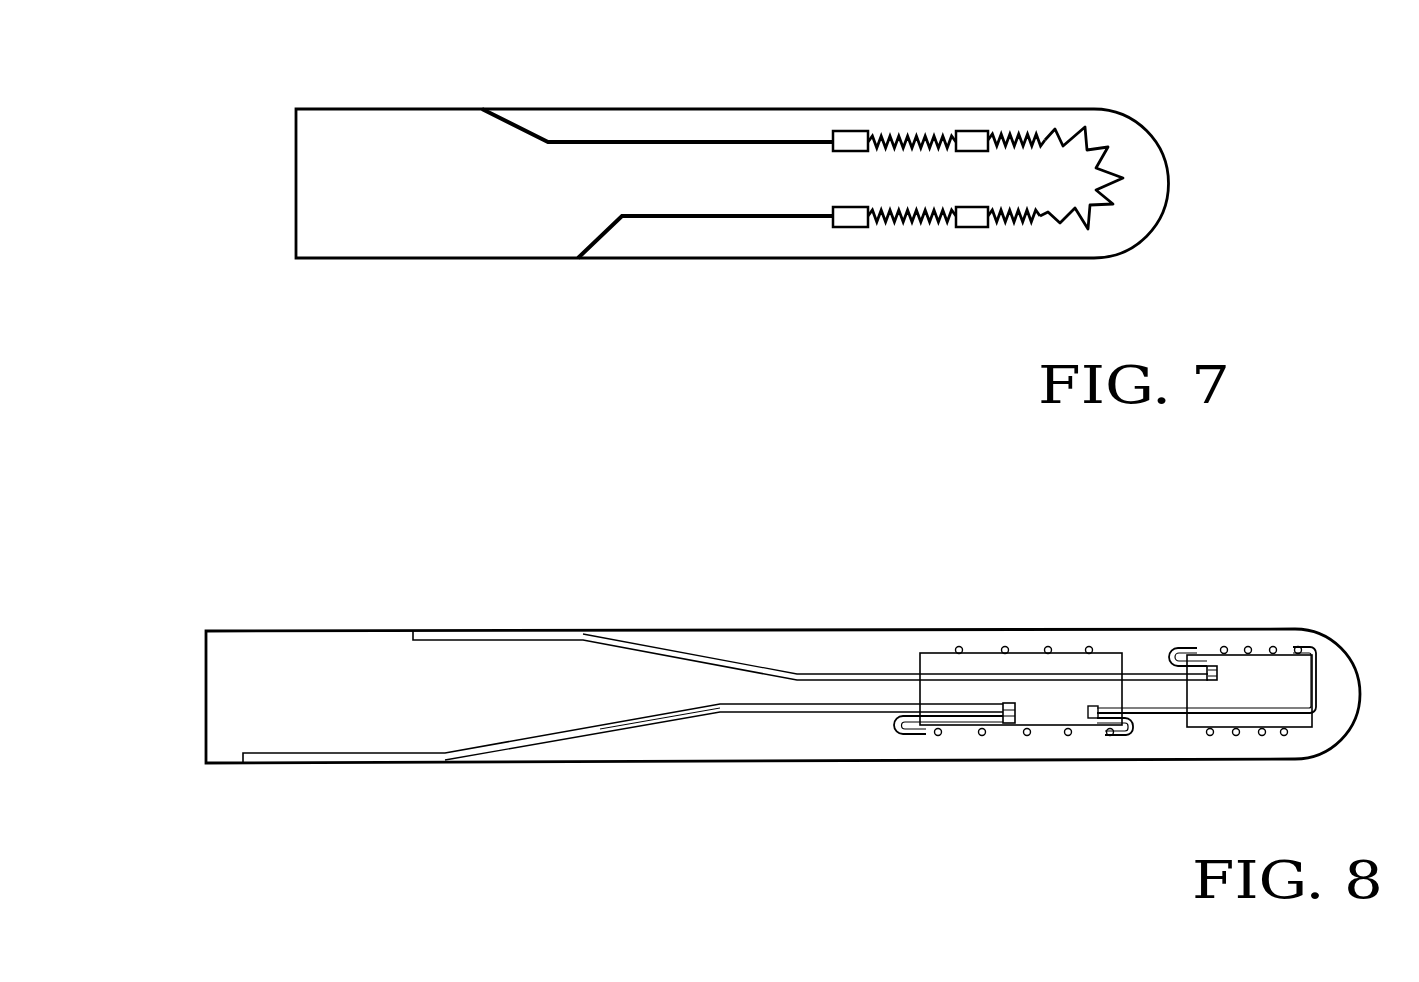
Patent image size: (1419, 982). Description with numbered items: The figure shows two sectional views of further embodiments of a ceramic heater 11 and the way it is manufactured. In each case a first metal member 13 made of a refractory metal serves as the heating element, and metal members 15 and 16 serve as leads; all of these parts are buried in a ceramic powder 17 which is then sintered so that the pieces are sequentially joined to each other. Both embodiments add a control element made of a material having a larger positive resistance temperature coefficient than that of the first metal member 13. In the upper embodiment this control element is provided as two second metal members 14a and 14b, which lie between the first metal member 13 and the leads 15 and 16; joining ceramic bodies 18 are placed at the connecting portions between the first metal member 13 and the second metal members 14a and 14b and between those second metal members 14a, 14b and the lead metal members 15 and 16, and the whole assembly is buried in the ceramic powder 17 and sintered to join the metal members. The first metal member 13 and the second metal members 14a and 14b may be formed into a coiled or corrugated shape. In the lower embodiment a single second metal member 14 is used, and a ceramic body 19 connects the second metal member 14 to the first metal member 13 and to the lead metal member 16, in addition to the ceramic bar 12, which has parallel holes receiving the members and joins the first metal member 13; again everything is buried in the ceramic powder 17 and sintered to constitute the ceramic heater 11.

In FIG. 7, the ceramic heater 11 is at (611, 90).
In FIG. 8, the ceramic heater 11 is at (864, 596).
In FIG. 8, the ceramic bar 12 is at (1232, 667).
In FIG. 7, the first metal member 13 is at (1072, 128).
In FIG. 8, the first metal member 13 is at (1272, 647).
In FIG. 8, the second metal member 14 is at (1050, 648).
In FIG. 7, the second metal member 14a is at (928, 134).
In FIG. 7, the second metal member 14b is at (920, 228).
In FIG. 7, the metal member 15 is at (731, 140).
In FIG. 8, the metal member 15 is at (737, 655).
In FIG. 7, the metal member 16 is at (708, 222).
In FIG. 8, the metal member 16 is at (690, 716).
In FIG. 7, the ceramic powder 17 is at (437, 142).
In FIG. 8, the ceramic powder 17 is at (793, 737).
In FIG. 7, the joining ceramic body 18 is at (856, 131).
In FIG. 8, the ceramic body 19 is at (1020, 655).